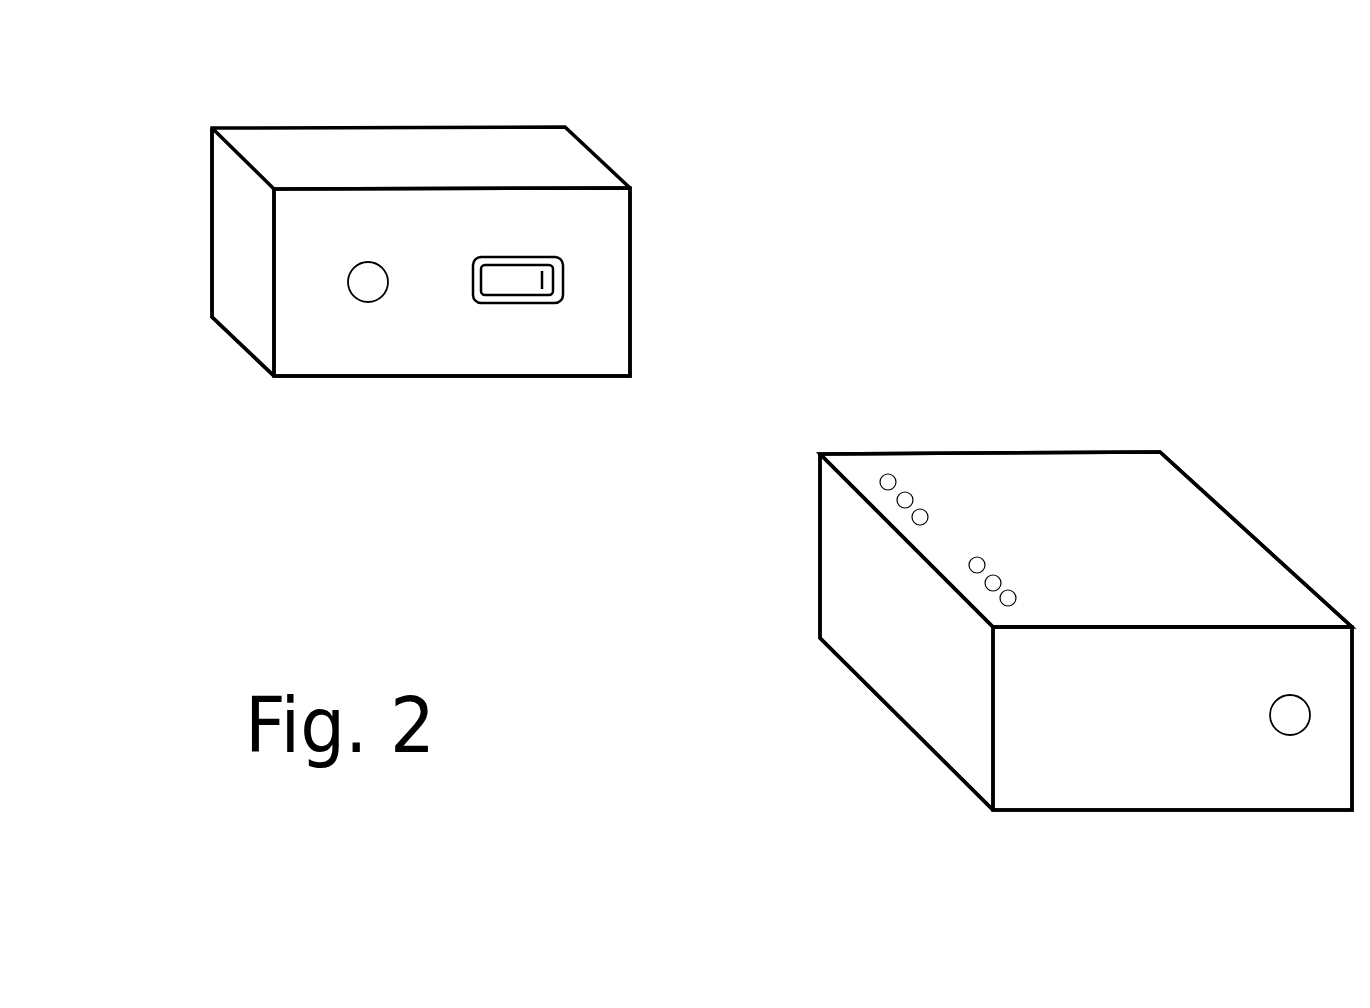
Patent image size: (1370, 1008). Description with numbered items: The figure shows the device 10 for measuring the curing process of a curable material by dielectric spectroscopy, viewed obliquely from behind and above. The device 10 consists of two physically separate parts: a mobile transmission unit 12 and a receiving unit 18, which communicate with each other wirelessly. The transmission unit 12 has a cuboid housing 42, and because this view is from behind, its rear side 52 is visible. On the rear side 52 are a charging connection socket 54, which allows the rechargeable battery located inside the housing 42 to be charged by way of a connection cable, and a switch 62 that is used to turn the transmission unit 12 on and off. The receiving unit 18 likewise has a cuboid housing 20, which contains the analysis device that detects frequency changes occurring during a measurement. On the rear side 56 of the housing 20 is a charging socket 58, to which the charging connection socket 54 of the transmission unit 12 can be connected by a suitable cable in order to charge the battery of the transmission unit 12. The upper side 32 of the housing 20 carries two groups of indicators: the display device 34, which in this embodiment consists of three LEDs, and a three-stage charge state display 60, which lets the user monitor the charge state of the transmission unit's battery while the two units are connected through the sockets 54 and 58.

The device 10 is at (950, 250).
The mobile transmission unit 12 is at (355, 100).
The receiving unit 18 is at (1048, 430).
The housing 20 is at (820, 548).
The upper side 32 is at (1165, 512).
The display device 34 is at (1013, 578).
The housing 42 is at (213, 231).
The rear side 52 is at (597, 222).
The charging connection socket 54 is at (365, 288).
The rear side 56 is at (1090, 778).
The charging socket 58 is at (1288, 722).
The charge state display 60 is at (928, 493).
The switch 62 is at (520, 283).